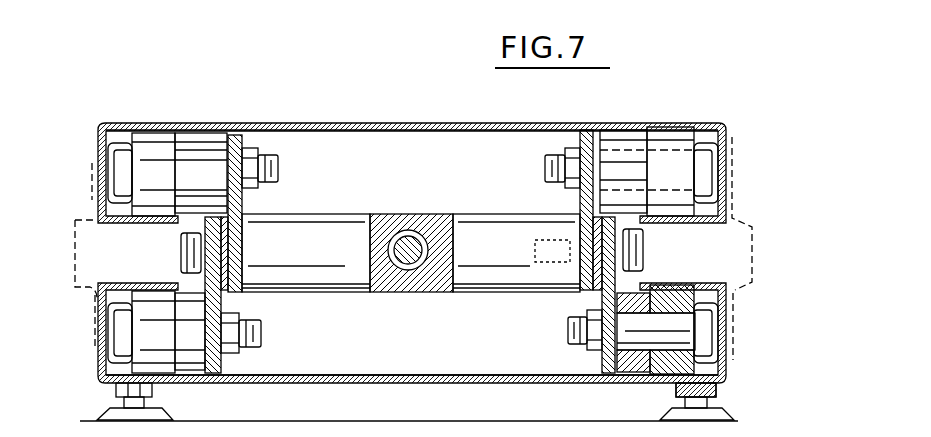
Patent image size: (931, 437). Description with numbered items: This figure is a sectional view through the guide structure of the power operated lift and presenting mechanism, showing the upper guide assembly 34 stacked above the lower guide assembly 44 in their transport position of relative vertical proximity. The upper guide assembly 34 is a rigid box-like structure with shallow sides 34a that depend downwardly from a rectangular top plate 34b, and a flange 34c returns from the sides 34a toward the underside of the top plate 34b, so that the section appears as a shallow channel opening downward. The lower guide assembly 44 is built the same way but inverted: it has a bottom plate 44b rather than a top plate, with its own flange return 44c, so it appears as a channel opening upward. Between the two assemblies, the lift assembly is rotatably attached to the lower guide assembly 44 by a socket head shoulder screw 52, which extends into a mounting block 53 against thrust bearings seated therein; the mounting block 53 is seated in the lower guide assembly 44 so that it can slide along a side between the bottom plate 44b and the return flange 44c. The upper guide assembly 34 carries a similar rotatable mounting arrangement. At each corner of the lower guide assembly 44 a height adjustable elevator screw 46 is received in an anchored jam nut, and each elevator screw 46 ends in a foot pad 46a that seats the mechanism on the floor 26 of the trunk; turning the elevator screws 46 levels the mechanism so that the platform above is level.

The floor 26 is at (435, 420).
The upper guide assembly 34 is at (99, 166).
The shallow sides 34a is at (97, 188).
The top plate 34b is at (500, 124).
The flange 34c is at (157, 232).
The lower guide assembly 44 is at (97, 338).
The bottom plate 44b is at (373, 385).
The flange return 44c is at (156, 284).
The elevator screw 46 is at (455, 386).
The foot pad 46a is at (722, 408).
The socket head shoulder screw 52 is at (720, 307).
The mounting block 53 is at (672, 383).